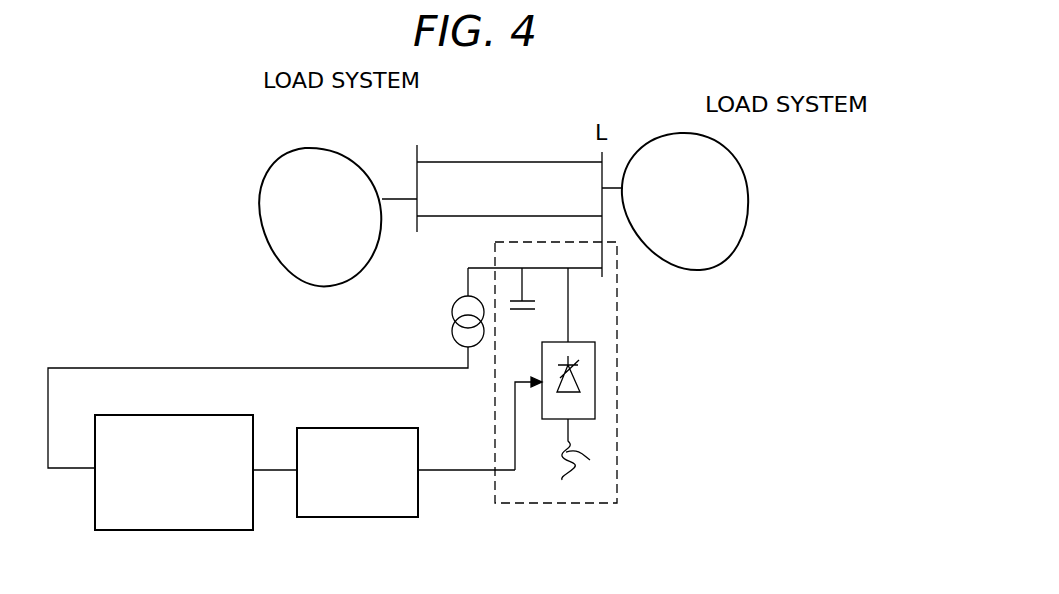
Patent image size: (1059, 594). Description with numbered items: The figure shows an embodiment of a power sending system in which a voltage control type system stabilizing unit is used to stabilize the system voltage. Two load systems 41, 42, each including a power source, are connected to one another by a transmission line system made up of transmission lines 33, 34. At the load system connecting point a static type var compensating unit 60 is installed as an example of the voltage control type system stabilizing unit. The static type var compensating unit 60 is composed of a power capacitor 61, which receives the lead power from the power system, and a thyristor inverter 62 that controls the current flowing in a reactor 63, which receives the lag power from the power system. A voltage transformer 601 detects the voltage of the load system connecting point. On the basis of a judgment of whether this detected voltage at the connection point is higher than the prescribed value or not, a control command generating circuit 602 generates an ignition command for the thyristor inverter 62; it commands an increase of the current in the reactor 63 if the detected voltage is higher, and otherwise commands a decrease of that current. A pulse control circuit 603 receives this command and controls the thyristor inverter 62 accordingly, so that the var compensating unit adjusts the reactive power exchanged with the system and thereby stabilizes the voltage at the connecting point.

The load system 41 is at (297, 147).
The load system 42 is at (678, 133).
The transmission line 33 is at (469, 162).
The transmission line 34 is at (469, 216).
The voltage transformer 601 is at (452, 318).
The power capacitor 61 is at (538, 311).
The thyristor inverter 62 is at (586, 341).
The reactor 63 is at (585, 453).
The static type var compensating unit 60 is at (590, 504).
The control command generating circuit 602 is at (236, 532).
The pulse control circuit 603 is at (401, 519).